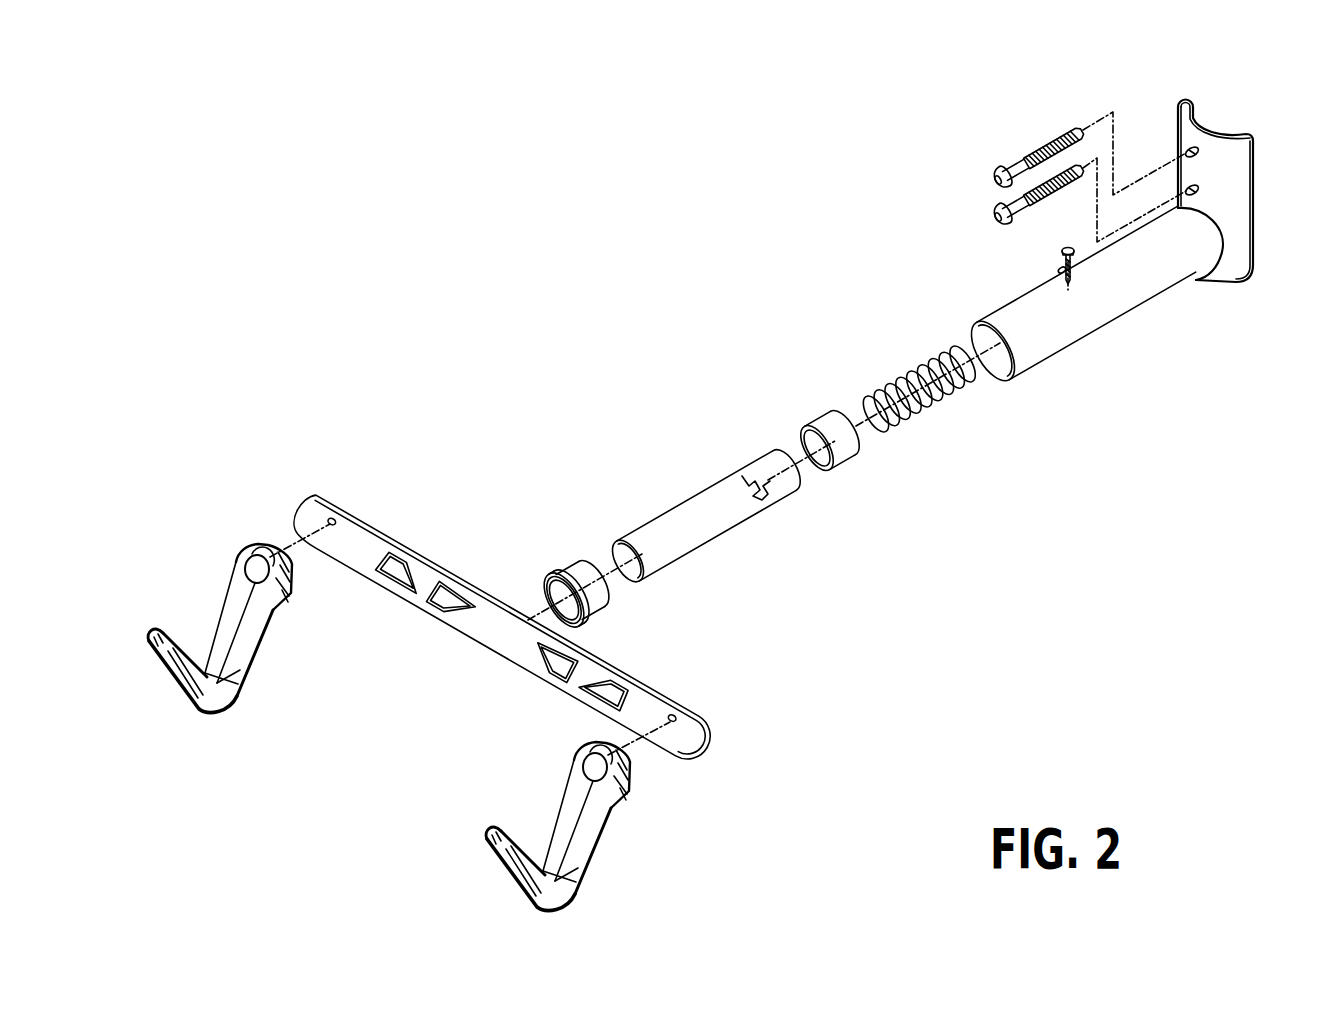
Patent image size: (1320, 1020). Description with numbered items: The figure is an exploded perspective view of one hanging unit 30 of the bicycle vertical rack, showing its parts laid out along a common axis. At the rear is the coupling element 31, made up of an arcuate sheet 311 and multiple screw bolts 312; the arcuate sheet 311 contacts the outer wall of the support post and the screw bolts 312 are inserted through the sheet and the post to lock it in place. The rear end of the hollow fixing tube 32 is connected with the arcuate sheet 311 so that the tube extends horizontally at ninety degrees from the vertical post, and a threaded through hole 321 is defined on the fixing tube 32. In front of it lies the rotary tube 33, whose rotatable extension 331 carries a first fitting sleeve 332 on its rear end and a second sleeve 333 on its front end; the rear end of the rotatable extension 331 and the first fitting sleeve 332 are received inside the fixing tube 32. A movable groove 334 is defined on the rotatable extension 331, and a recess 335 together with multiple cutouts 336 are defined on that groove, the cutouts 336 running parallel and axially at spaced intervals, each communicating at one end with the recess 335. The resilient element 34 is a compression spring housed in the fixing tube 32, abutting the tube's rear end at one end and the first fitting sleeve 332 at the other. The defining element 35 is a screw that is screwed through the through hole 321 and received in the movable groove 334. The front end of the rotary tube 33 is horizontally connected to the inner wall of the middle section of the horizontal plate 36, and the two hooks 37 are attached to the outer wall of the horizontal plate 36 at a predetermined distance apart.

The hanging unit 30 is at (528, 300).
The coupling element 31 is at (1126, 75).
The arcuate sheet 311 is at (1178, 134).
The screw bolts 312 is at (1055, 162).
The fixing tube 32 is at (1110, 303).
The through hole 321 is at (1056, 270).
The rotary tube 33 is at (742, 552).
The rotatable extension 331 is at (640, 535).
The first fitting sleeve 332 is at (843, 462).
The second sleeve 333 is at (610, 600).
The movable groove 334 is at (714, 448).
The recess 335 is at (722, 474).
The cutouts 336 is at (743, 470).
The resilient element 34 is at (948, 408).
The defining element 35 is at (1060, 258).
The horizontal plate 36 is at (496, 638).
The hooks 37 is at (237, 661).